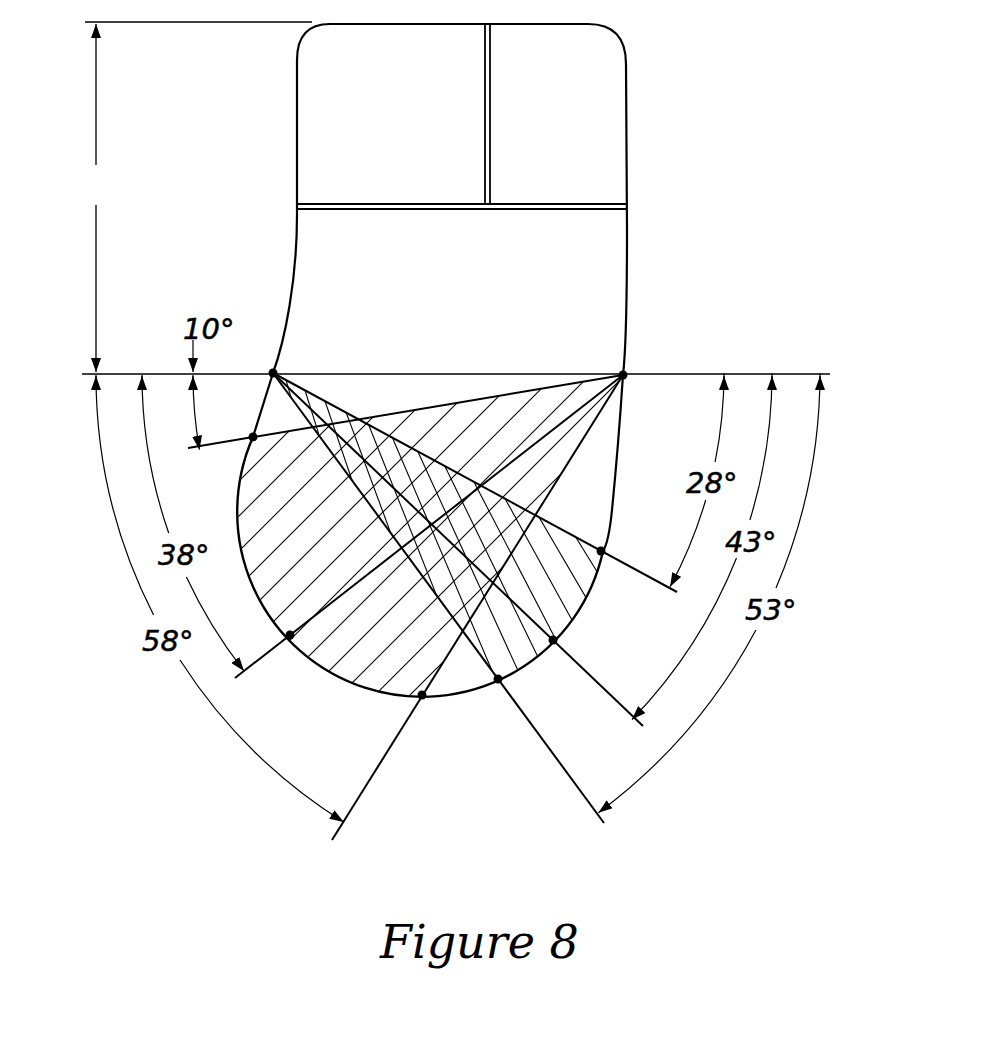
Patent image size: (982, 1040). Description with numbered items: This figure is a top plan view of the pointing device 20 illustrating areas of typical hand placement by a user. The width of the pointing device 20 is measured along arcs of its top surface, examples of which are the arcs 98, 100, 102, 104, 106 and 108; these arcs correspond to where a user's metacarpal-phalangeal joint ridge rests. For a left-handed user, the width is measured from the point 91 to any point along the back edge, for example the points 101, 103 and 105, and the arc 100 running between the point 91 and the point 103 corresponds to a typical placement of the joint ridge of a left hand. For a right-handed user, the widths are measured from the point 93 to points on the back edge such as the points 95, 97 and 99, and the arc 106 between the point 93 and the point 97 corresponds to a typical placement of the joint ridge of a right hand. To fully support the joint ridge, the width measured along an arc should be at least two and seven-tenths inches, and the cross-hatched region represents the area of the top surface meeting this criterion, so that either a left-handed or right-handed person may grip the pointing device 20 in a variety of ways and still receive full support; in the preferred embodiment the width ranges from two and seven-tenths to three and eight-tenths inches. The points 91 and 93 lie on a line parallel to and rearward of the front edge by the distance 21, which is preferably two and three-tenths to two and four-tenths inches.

The pointing device 20 is at (692, 131).
The distance 21 is at (193, 197).
The point 91 is at (273, 373).
The point 93 is at (623, 375).
The point 95 is at (253, 437).
The point 97 is at (290, 636).
The point 99 is at (422, 697).
The point 101 is at (498, 681).
The point 103 is at (600, 642).
The point 105 is at (601, 550).
The arc 98 is at (556, 528).
The arc 100 is at (524, 612).
The arc 102 is at (477, 652).
The arc 104 is at (289, 433).
The arc 106 is at (348, 590).
The arc 108 is at (445, 658).